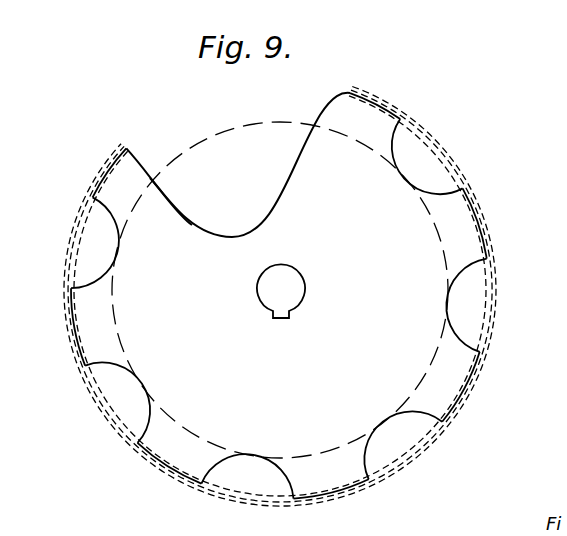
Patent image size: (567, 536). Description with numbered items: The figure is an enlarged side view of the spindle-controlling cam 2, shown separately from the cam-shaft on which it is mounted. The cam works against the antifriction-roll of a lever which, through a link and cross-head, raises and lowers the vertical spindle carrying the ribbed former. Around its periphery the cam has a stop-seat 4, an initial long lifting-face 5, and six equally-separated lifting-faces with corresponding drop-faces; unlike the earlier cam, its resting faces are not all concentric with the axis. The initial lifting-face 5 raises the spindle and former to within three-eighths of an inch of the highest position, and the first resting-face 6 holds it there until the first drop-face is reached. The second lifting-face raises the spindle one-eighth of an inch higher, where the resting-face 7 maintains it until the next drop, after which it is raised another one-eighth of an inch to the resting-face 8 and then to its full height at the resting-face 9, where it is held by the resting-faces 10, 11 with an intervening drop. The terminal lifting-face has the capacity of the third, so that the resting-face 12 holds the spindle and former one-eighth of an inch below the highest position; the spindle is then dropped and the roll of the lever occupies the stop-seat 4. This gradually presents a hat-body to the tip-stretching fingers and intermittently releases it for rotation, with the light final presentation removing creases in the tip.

The cam 2 is at (280, 297).
The stop-seat 4 is at (208, 226).
The initial long lifting-face 5 is at (184, 203).
The first resting-face 6 is at (110, 172).
The resting-face 7 is at (70, 320).
The resting-face 8 is at (150, 463).
The resting-face 9 is at (313, 500).
The resting-face 10 is at (474, 376).
The resting-face 11 is at (498, 213).
The resting-face 12 is at (394, 99).